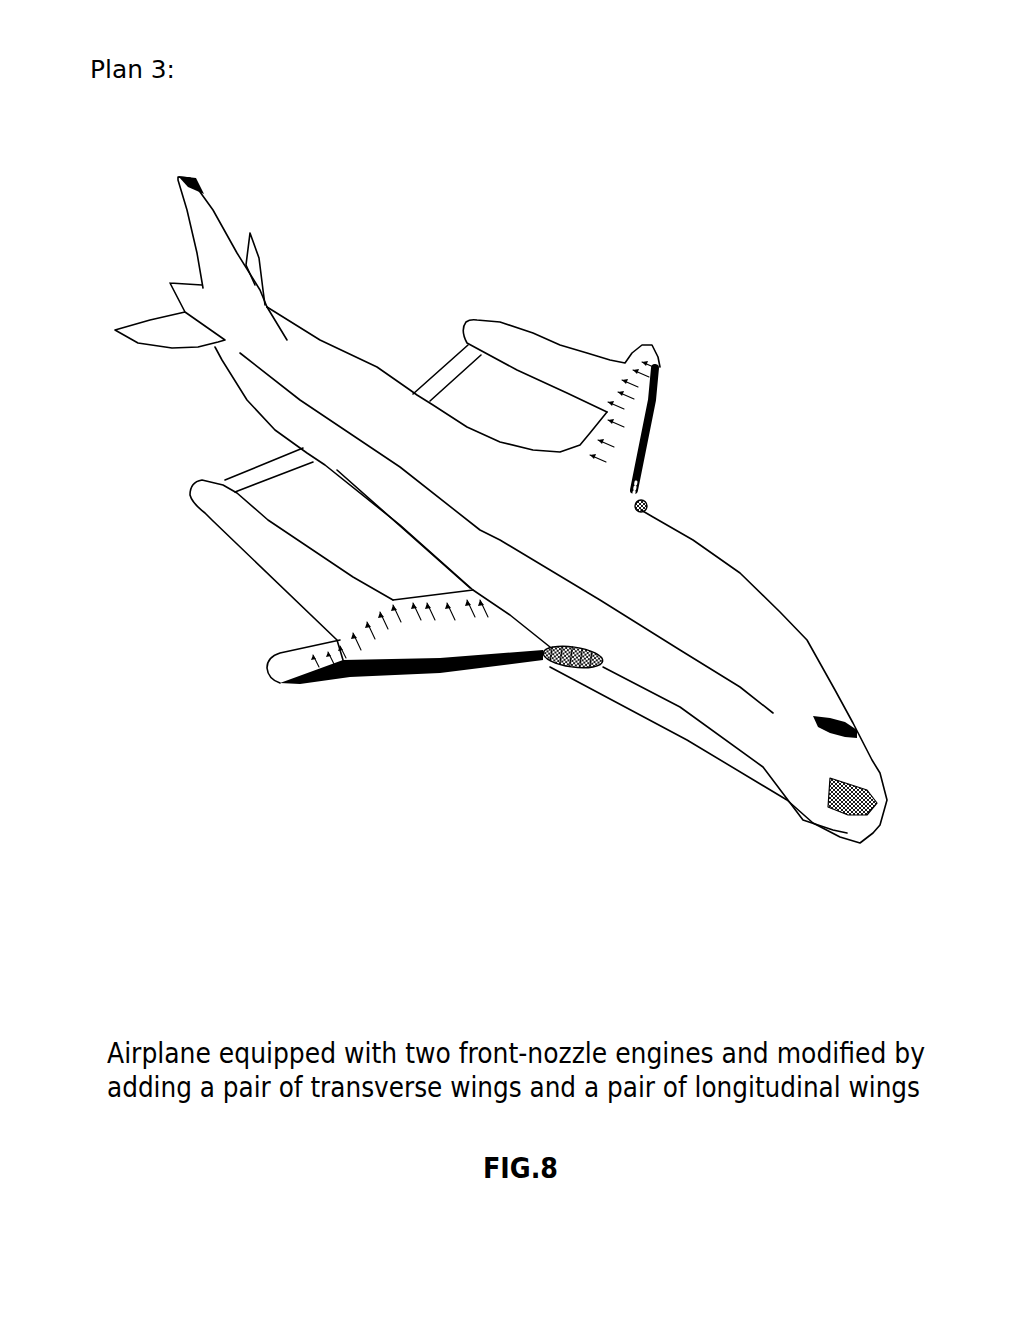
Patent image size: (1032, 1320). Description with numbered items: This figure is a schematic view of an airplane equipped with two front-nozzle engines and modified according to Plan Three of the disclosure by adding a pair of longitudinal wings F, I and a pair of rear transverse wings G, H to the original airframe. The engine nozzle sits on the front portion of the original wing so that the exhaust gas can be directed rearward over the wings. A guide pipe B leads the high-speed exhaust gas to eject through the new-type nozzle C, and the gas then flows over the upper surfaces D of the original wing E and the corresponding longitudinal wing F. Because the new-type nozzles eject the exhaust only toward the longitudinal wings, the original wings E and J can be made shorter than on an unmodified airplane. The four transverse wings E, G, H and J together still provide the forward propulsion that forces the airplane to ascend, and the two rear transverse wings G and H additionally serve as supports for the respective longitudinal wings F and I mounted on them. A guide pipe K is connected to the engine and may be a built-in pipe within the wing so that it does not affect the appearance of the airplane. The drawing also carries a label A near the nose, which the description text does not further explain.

The Air intake with grille A is at (832, 827).
The guide pipe B is at (430, 650).
The new-type nozzle C is at (582, 663).
The upper surfaces of the original wing and longitudinal wing D is at (307, 653).
The original wing E is at (251, 540).
The longitudinal wing F is at (240, 463).
The rear transverse wing G is at (424, 358).
The rear transverse wing H is at (560, 346).
The longitudinal wing I is at (664, 395).
The original wing J is at (662, 513).
The guide pipe connected to the engine K is at (640, 450).